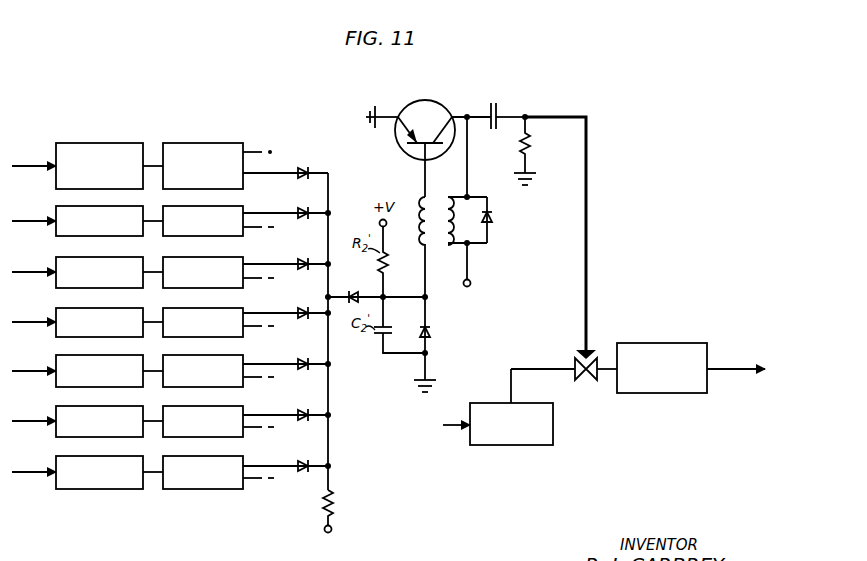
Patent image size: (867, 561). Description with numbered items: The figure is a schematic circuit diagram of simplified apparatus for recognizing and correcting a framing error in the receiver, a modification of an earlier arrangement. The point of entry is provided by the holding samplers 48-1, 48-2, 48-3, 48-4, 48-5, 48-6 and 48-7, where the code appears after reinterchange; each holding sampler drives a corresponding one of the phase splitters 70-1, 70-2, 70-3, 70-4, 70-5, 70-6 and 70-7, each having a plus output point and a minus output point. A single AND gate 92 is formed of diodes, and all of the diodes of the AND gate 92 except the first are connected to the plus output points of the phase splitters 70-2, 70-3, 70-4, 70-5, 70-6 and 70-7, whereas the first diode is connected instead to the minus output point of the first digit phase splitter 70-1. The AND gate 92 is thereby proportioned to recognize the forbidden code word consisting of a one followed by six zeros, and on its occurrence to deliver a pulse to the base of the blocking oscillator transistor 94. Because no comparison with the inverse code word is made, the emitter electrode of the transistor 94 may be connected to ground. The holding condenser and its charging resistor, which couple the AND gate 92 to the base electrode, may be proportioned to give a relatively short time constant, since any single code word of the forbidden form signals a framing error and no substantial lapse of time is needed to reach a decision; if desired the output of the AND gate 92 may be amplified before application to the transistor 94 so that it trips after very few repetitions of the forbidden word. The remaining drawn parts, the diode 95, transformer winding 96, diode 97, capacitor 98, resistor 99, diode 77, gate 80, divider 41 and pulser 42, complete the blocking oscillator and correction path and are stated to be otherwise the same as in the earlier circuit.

The holding sampler 48-1 is at (93, 143).
The holding sampler 48-2 is at (88, 207).
The holding sampler 48-3 is at (88, 258).
The holding sampler 48-4 is at (88, 309).
The holding sampler 48-5 is at (88, 356).
The holding sampler 48-6 is at (88, 407).
The holding sampler 48-7 is at (88, 457).
The first digit phase splitter 70-1 is at (195, 143).
The phase splitter 70-2 is at (195, 207).
The phase splitter 70-3 is at (195, 258).
The phase splitter 70-4 is at (195, 309).
The phase splitter 70-5 is at (195, 356).
The phase splitter 70-6 is at (195, 407).
The phase splitter 70-7 is at (195, 457).
The AND gate 92 is at (352, 361).
The blocking oscillator transistor 94 is at (426, 108).
The diode 95 is at (353, 292).
The transformer 96 is at (437, 246).
The diode 97 is at (433, 333).
The capacitor 98 is at (500, 105).
The resistor 99 is at (532, 148).
The diode 77 is at (493, 219).
The gate 80 is at (575, 355).
The STMV 2:1 divider 41 is at (656, 394).
The 10 MC pulser 42 is at (553, 418).